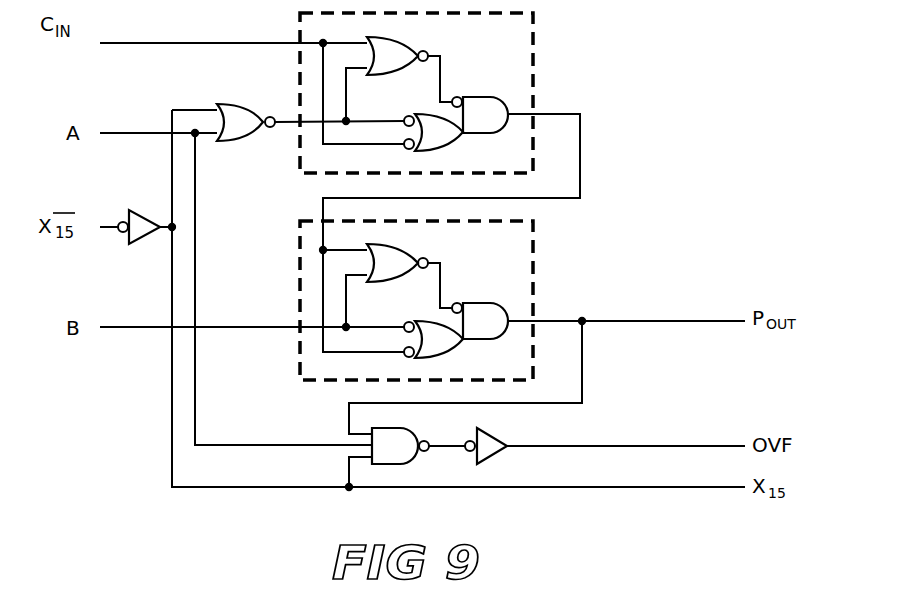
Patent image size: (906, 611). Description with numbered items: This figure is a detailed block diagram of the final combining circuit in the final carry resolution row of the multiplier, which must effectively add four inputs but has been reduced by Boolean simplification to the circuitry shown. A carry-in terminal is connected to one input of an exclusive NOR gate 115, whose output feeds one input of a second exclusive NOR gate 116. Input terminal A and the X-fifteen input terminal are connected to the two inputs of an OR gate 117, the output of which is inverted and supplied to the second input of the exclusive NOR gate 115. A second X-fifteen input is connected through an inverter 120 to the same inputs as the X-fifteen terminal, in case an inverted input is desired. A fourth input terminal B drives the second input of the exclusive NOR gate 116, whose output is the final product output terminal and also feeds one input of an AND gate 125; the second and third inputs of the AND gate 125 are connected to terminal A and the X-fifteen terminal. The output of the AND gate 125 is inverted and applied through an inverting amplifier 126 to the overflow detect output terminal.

The exclusive NOR gate 115 is at (535, 75).
The second exclusive NOR gate 116 is at (535, 279).
The OR gate 117 is at (250, 140).
The inverter 120 is at (145, 209).
The AND gate 125 is at (395, 428).
The inverting amplifier 126 is at (485, 430).